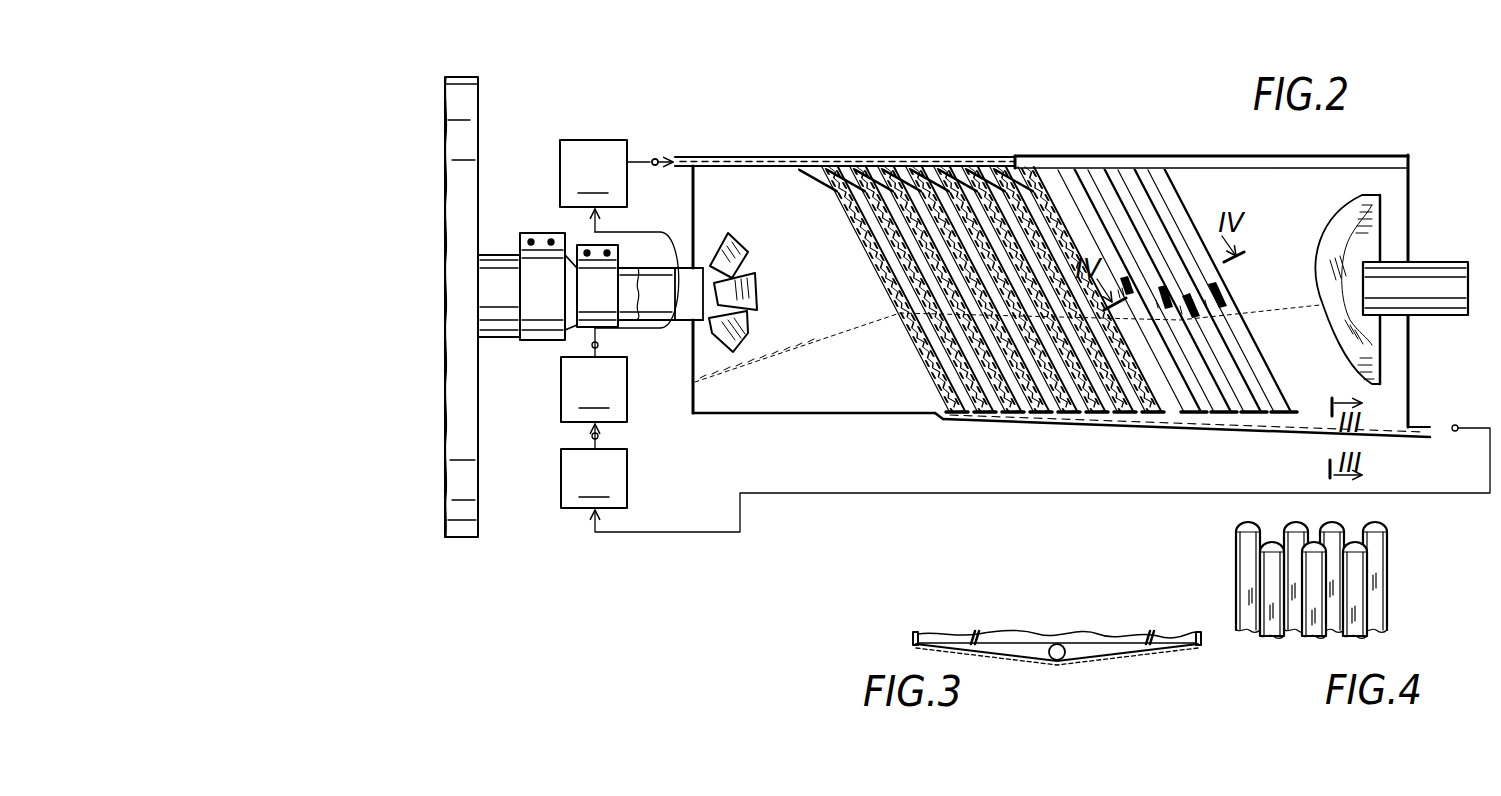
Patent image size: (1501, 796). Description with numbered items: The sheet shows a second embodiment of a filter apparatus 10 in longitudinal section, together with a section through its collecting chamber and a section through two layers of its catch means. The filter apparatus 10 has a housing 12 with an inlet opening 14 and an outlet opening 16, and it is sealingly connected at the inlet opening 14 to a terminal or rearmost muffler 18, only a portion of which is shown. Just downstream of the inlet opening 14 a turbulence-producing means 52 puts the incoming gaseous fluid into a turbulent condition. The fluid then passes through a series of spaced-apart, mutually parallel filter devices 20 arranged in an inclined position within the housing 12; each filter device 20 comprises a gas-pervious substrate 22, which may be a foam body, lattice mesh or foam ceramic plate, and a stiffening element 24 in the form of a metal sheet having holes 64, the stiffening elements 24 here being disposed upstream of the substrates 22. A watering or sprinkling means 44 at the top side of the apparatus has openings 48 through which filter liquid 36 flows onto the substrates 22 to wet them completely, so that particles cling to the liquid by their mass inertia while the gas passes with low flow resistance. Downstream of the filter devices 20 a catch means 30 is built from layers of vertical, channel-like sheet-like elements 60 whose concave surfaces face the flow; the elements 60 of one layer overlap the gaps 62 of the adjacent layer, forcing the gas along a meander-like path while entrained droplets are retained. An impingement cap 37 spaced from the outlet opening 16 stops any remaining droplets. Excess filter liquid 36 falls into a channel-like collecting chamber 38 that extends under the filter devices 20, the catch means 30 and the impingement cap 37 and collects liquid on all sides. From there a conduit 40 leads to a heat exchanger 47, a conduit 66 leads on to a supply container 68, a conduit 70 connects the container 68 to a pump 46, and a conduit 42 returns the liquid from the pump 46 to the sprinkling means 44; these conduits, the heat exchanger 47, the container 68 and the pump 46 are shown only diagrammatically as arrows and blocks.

In FIG. 2, the filter apparatus 10 is at (1404, 148).
In FIG. 2, the housing 12 is at (768, 200).
In FIG. 2, the inlet opening 14 is at (651, 288).
In FIG. 2, the outlet opening 16 is at (1440, 287).
In FIG. 2, the terminal or rearmost muffler 18 is at (483, 135).
In FIG. 2, the filter device 20 is at (1000, 172).
In FIG. 2, the gas-pervious substrate 22 is at (1050, 176).
In FIG. 2, the stiffening element 24 is at (868, 251).
In FIG. 2, the catch means 30 is at (1170, 186).
In FIG. 2, the filter liquid 36 is at (808, 163).
In FIG. 2, the impingement cap 37 is at (1340, 242).
In FIG. 2, the collecting chamber 38 is at (1138, 422).
In FIG. 3, the collecting chamber 38 is at (1027, 657).
In FIG. 2, the conduit 40 is at (1455, 431).
In FIG. 3, the conduit 40 is at (1055, 661).
In FIG. 2, the conduit 42 is at (658, 159).
In FIG. 2, the watering or sprinkling means 44 is at (890, 167).
In FIG. 2, the pump 46 is at (594, 466).
In FIG. 2, the heat exchanger 47 is at (619, 234).
In FIG. 2, the openings 48 is at (868, 166).
In FIG. 2, the turbulence-producing means 52 is at (722, 250).
In FIG. 4, the sheet-like elements 60 is at (1315, 583).
In FIG. 4, the gaps 62 is at (1262, 536).
In FIG. 2, the holes 64 is at (833, 212).
In FIG. 2, the conduit 66 is at (598, 436).
In FIG. 2, the supply container 68 is at (594, 375).
In FIG. 2, the conduit 70 is at (598, 345).